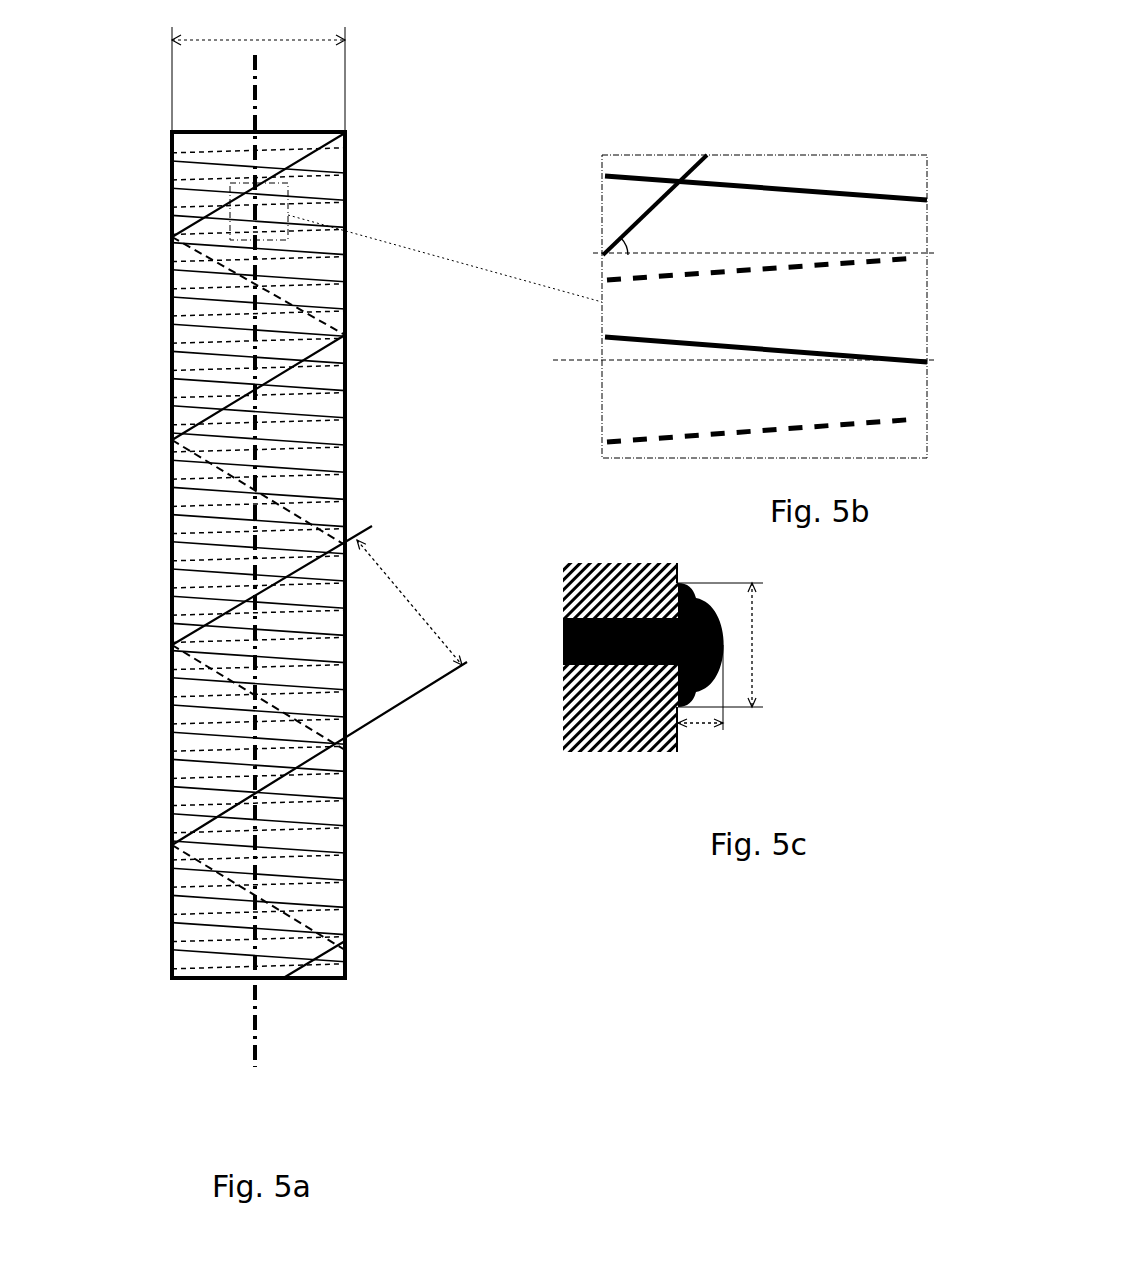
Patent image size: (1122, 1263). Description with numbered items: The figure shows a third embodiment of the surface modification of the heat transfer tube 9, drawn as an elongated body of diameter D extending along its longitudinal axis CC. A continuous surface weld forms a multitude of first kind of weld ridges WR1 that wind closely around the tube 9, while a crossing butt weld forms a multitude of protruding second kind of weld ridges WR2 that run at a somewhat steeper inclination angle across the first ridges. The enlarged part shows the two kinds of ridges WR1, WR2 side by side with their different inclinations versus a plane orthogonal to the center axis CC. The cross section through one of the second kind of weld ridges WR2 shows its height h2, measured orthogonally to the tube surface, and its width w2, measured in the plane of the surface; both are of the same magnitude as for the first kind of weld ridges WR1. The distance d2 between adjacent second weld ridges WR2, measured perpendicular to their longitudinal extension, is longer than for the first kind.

In FIG. 5A, the heat transfer tube 9 is at (170, 303).
In FIG. 5A, the first kind of weld ridges WR1 is at (170, 245).
In FIG. 5B, the first kind of weld ridges WR1 is at (893, 357).
In FIG. 5A, the second kind of weld ridges WR2 is at (343, 158).
In FIG. 5B, the second kind of weld ridges WR2 is at (617, 240).
In FIG. 5C, the second kind of weld ridges WR2 is at (675, 710).
In FIG. 5A, the diameter of body D is at (258, 72).
In FIG. 5A, the longitudinal axis CC is at (261, 582).
In FIG. 5A, the distance between adjacent second kind of weld ridges d2 is at (409, 602).
In FIG. 5C, the width of the second kind of weld ridges w2 is at (733, 645).
In FIG. 5C, the height of the second kind of weld ridges h2 is at (700, 705).